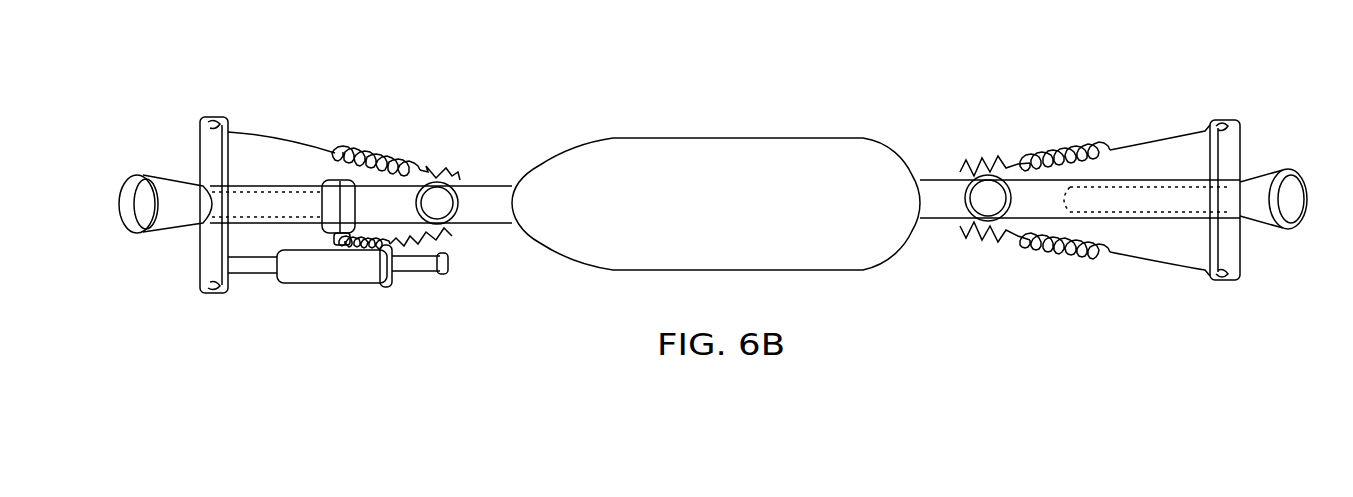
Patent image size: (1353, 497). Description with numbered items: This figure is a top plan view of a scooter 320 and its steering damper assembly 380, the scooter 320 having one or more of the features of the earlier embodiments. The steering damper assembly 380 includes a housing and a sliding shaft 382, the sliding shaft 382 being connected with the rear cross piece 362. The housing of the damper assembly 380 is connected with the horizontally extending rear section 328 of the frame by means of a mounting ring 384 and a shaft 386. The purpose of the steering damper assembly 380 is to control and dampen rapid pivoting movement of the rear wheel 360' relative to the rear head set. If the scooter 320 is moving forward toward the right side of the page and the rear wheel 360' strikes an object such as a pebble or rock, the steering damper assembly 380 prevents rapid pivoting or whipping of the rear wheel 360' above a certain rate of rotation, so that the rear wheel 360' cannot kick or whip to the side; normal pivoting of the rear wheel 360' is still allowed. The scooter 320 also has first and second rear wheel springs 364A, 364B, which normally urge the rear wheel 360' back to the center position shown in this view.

The scooter 320 is at (558, 122).
The horizontally extending rear section 328 is at (250, 185).
The rear wheel 360' is at (216, 169).
The rear cross piece 362 is at (205, 245).
The first rear wheel spring 364A is at (380, 160).
The second rear wheel spring 364B is at (390, 245).
The steering damper assembly 380 is at (337, 270).
The sliding shaft 382 is at (252, 268).
The mounting ring 384 is at (328, 185).
The shaft 386 is at (340, 238).